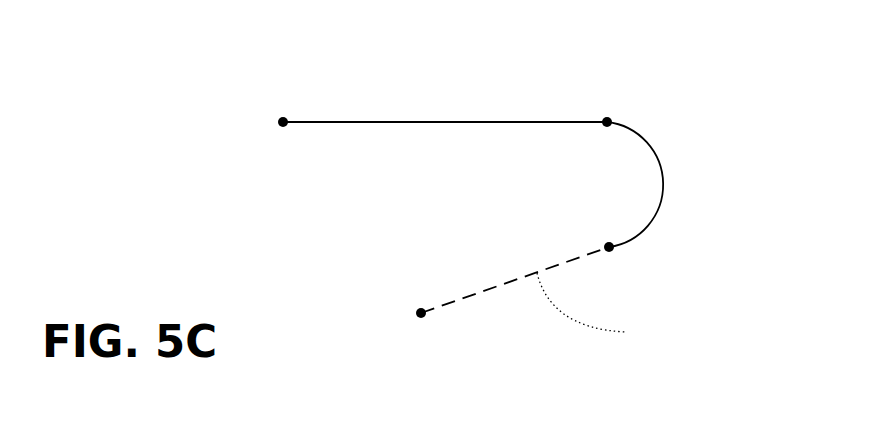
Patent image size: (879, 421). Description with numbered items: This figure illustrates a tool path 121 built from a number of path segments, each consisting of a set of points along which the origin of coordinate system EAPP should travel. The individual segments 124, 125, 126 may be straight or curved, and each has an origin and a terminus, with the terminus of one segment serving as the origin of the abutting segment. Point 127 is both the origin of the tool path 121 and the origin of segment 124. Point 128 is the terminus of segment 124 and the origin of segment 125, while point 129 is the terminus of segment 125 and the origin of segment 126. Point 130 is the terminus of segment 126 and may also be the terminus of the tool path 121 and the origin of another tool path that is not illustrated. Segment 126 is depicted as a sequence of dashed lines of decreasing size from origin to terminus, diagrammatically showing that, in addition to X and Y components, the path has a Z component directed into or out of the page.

The tool path 121 is at (391, 92).
The segment 124 is at (505, 121).
The segment 125 is at (663, 172).
The segment 126 is at (602, 308).
The point 127 is at (282, 128).
The point 128 is at (610, 115).
The point 129 is at (612, 250).
The point 130 is at (421, 318).